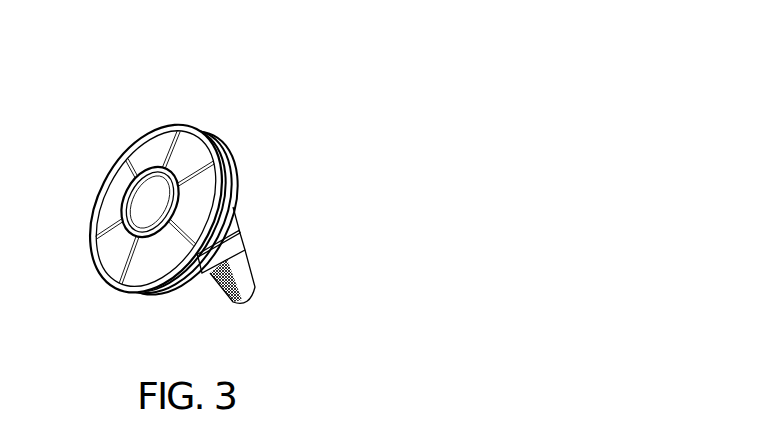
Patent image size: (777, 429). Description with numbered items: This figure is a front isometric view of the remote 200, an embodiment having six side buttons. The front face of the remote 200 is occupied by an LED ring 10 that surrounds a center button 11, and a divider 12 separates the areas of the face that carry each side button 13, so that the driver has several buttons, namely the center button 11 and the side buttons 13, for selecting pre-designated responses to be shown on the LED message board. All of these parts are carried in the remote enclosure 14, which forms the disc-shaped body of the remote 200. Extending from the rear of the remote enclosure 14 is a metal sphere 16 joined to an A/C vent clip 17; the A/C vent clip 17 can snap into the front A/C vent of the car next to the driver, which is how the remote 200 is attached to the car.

The remote 200 is at (314, 51).
The LED ring 10 is at (147, 168).
The center button 11 is at (142, 206).
The divider 12 is at (123, 262).
The side button 13 is at (195, 136).
The remote enclosure 14 is at (232, 157).
The metal sphere 16 is at (229, 226).
The A/C vent clip 17 is at (243, 280).